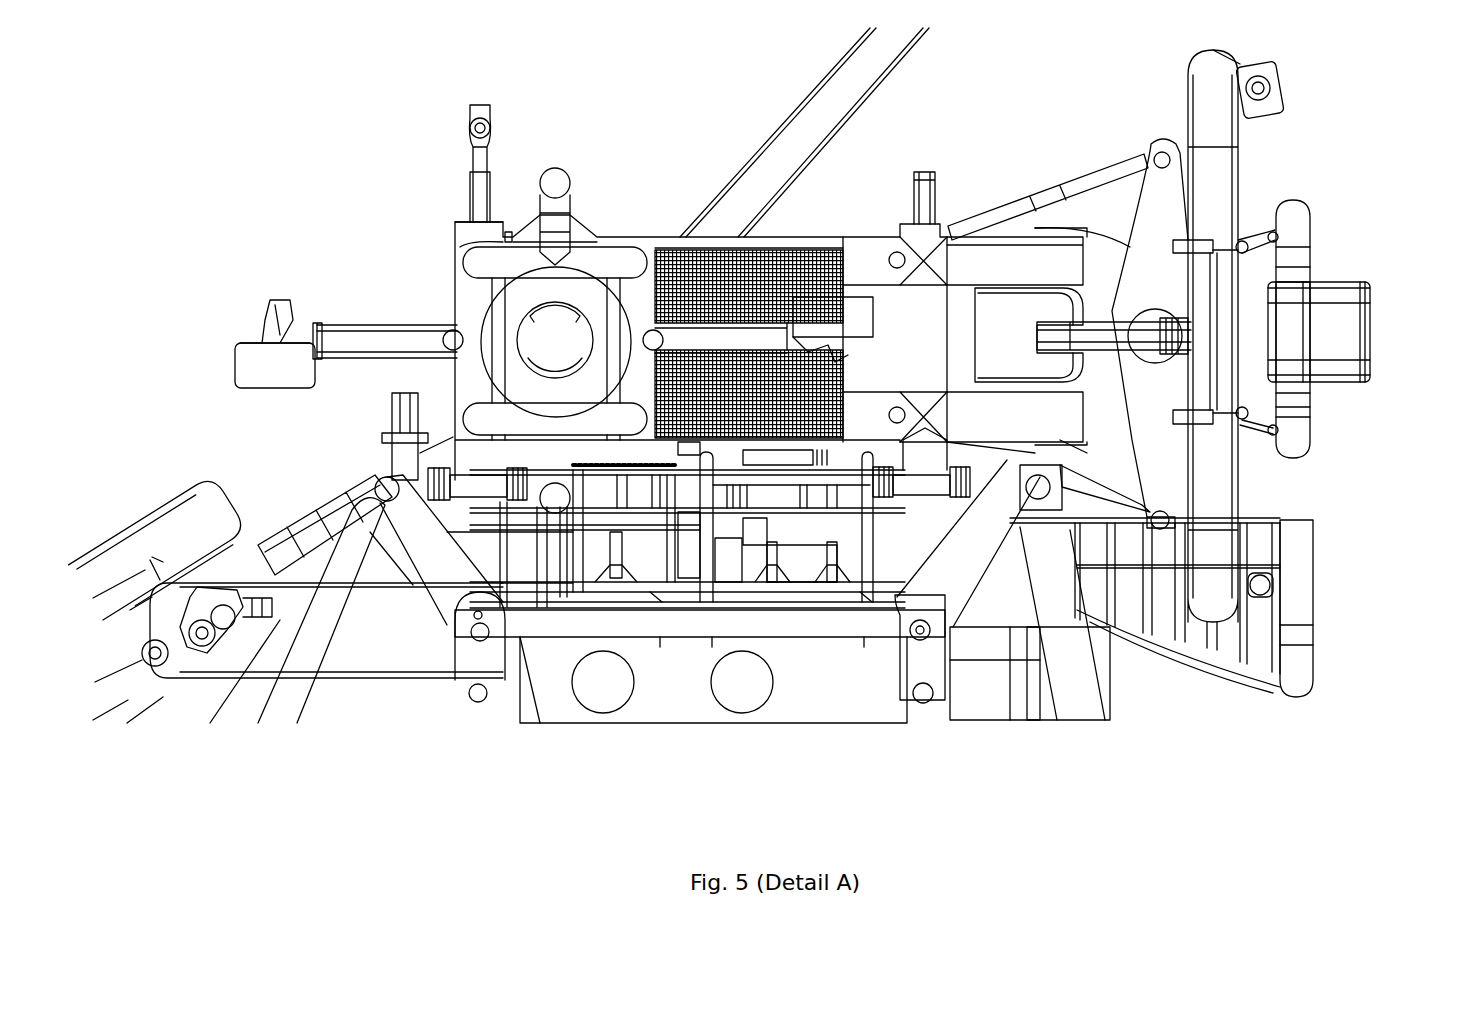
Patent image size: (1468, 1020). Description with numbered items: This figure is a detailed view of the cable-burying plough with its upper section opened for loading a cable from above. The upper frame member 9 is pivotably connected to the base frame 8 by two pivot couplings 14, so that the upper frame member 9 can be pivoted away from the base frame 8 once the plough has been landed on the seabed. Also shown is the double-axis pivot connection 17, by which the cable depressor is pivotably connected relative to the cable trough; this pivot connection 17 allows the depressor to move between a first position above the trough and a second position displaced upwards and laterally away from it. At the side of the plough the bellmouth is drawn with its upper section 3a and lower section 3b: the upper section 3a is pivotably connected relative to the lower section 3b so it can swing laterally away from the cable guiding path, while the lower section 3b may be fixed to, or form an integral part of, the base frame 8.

The upper frame member 9 is at (847, 232).
The pivot couplings 14 is at (466, 476).
The base frame 8 is at (540, 699).
The double-axis pivot connection 17 is at (228, 644).
The upper section 3a is at (1301, 228).
The lower section 3b is at (1300, 605).